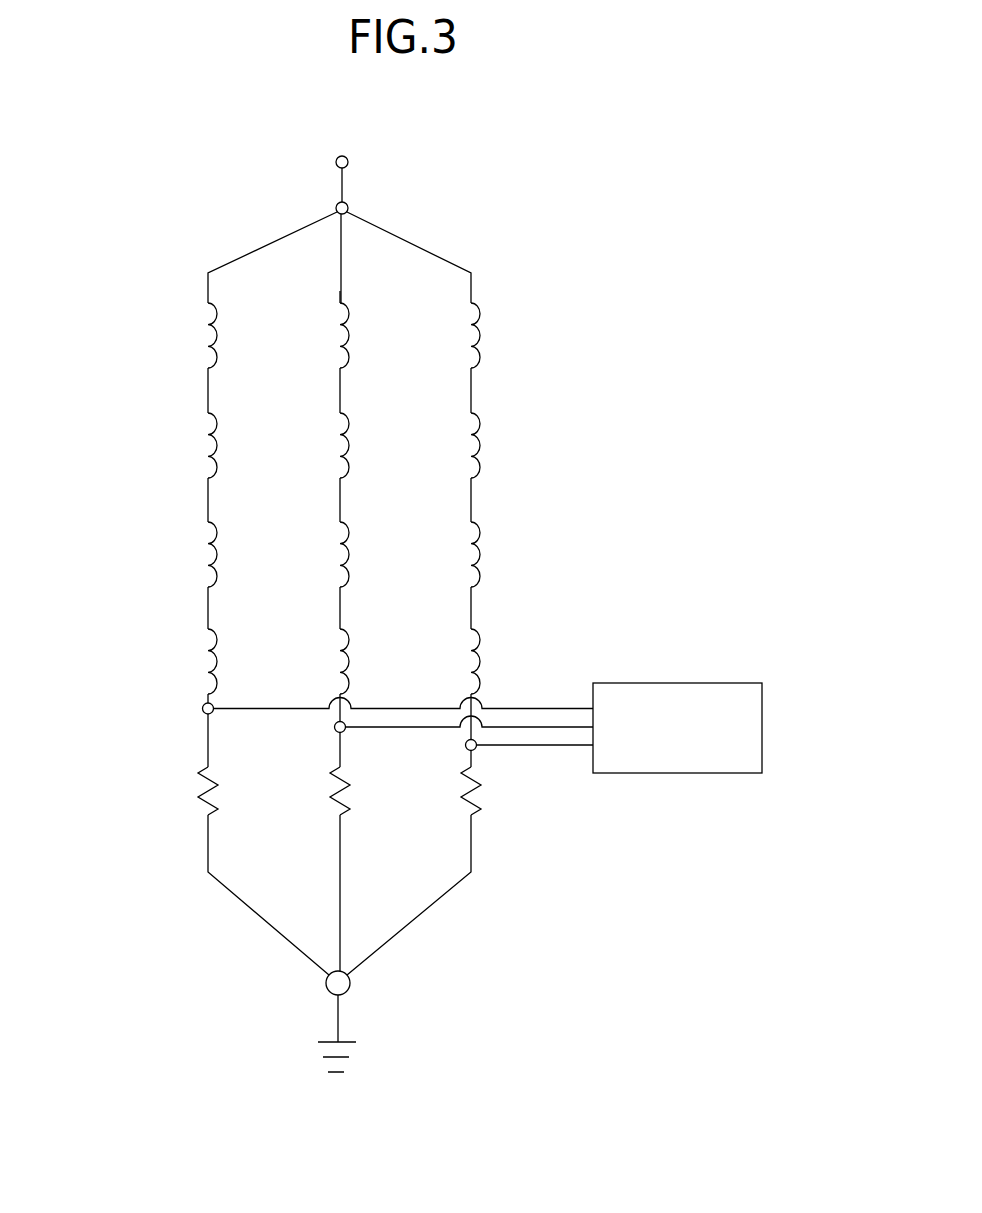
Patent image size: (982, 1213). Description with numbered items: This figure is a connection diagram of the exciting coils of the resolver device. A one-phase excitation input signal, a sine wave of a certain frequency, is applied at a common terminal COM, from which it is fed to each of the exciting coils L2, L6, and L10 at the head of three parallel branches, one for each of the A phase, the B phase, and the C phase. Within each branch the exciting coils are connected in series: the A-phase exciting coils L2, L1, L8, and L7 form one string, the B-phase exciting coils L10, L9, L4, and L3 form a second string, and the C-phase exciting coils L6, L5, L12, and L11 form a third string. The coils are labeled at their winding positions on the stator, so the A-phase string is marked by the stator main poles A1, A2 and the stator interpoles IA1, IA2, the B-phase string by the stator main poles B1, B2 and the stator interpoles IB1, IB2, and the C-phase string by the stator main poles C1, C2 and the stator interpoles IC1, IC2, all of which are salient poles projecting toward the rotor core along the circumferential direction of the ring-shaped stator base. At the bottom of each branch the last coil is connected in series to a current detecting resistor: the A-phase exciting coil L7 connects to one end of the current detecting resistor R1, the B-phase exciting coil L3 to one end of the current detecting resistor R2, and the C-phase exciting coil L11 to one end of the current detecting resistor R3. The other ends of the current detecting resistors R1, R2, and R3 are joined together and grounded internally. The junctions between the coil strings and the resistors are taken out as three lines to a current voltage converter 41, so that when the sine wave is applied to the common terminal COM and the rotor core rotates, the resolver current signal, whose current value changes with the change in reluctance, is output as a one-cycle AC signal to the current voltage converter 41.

The common terminal COM is at (348, 162).
The stator main pole A1 is at (194, 312).
The stator interpole IA1 is at (194, 422).
The stator main pole A2 is at (194, 531).
The stator interpole IA2 is at (194, 638).
The stator main pole B1 is at (326, 312).
The stator interpole IB1 is at (326, 422).
The stator main pole B2 is at (326, 531).
The stator interpole IB2 is at (326, 638).
The stator main pole C1 is at (457, 312).
The stator interpole IC1 is at (457, 422).
The stator main pole C2 is at (457, 531).
The stator interpole IC2 is at (457, 638).
The exciting coil L1 is at (225, 442).
The exciting coil L2 is at (225, 332).
The exciting coil L3 is at (357, 658).
The exciting coil L4 is at (357, 551).
The exciting coil L5 is at (488, 442).
The exciting coil L6 is at (488, 332).
The exciting coil L7 is at (225, 658).
The exciting coil L8 is at (225, 551).
The exciting coil L9 is at (357, 442).
The exciting coil L10 is at (357, 332).
The exciting coil L11 is at (488, 658).
The exciting coil L12 is at (488, 551).
The current detecting resistor R1 is at (180, 772).
The current detecting resistor R2 is at (312, 772).
The current detecting resistor R3 is at (444, 772).
The current voltage converter 41 is at (700, 683).